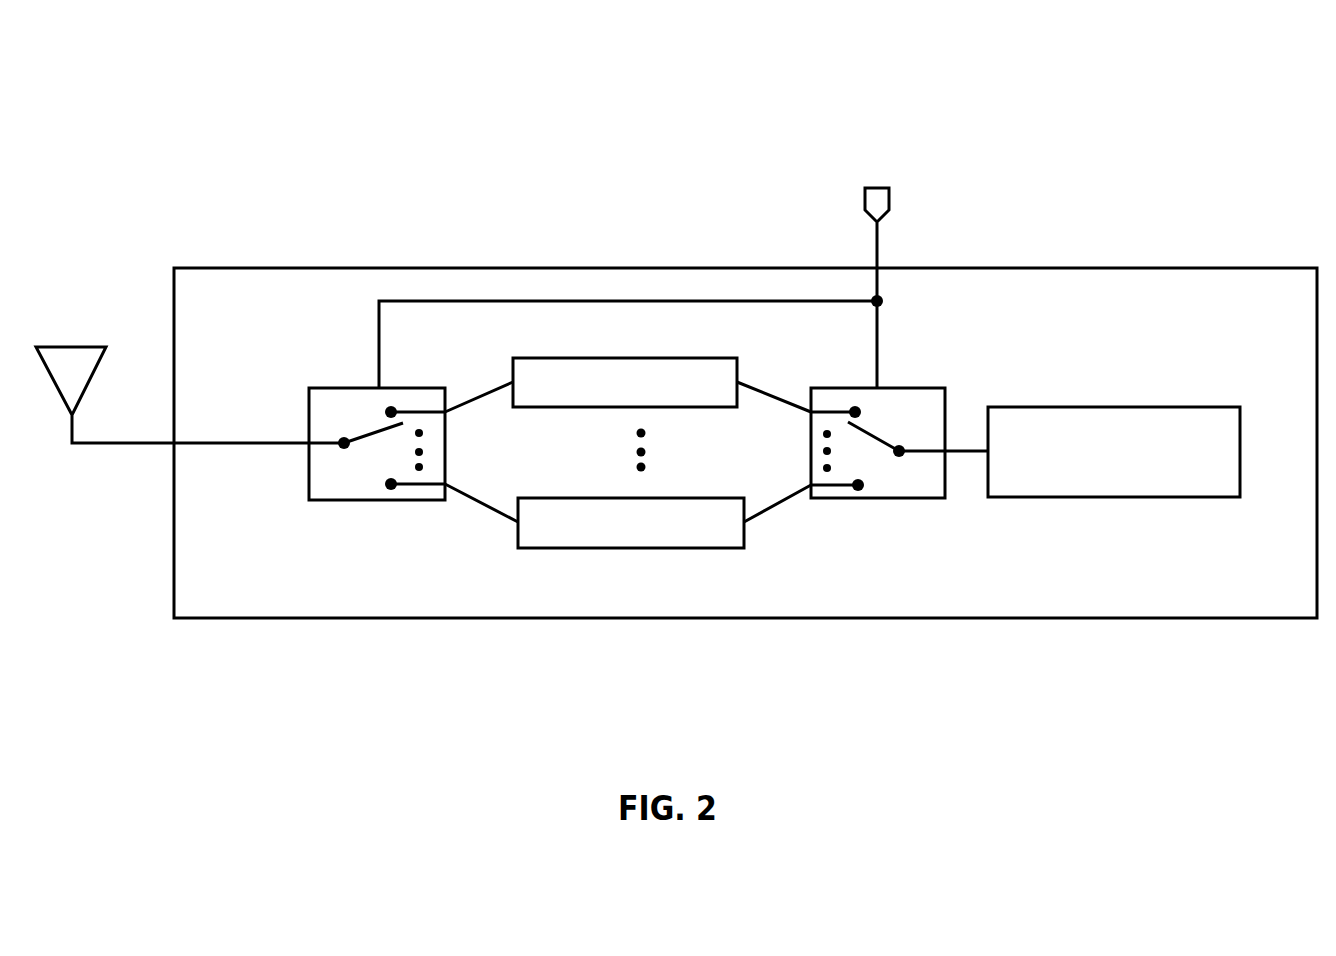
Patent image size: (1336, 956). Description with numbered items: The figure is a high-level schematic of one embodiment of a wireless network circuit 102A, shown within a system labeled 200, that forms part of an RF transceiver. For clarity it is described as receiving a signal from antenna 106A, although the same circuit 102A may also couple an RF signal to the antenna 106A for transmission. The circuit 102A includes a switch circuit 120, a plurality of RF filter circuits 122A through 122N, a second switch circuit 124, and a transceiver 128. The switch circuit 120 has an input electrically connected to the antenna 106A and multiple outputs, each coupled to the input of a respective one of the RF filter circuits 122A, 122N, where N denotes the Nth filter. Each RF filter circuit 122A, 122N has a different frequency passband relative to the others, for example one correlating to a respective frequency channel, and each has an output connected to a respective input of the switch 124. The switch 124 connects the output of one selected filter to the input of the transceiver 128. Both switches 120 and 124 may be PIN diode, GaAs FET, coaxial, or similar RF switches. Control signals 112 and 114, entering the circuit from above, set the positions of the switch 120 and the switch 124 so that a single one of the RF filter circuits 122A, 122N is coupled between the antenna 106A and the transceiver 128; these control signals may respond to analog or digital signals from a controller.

The communication system 200 is at (1188, 88).
The wireless network circuit 102A is at (547, 268).
The antenna 106A is at (143, 303).
The control signal 112 is at (964, 266).
The control signal 114 is at (890, 190).
The switch circuit 120 is at (352, 388).
The RF filter circuit 122A is at (688, 358).
The RF filter circuit 122N is at (700, 548).
The switch circuit 124 is at (900, 388).
The transceiver 128 is at (1052, 407).